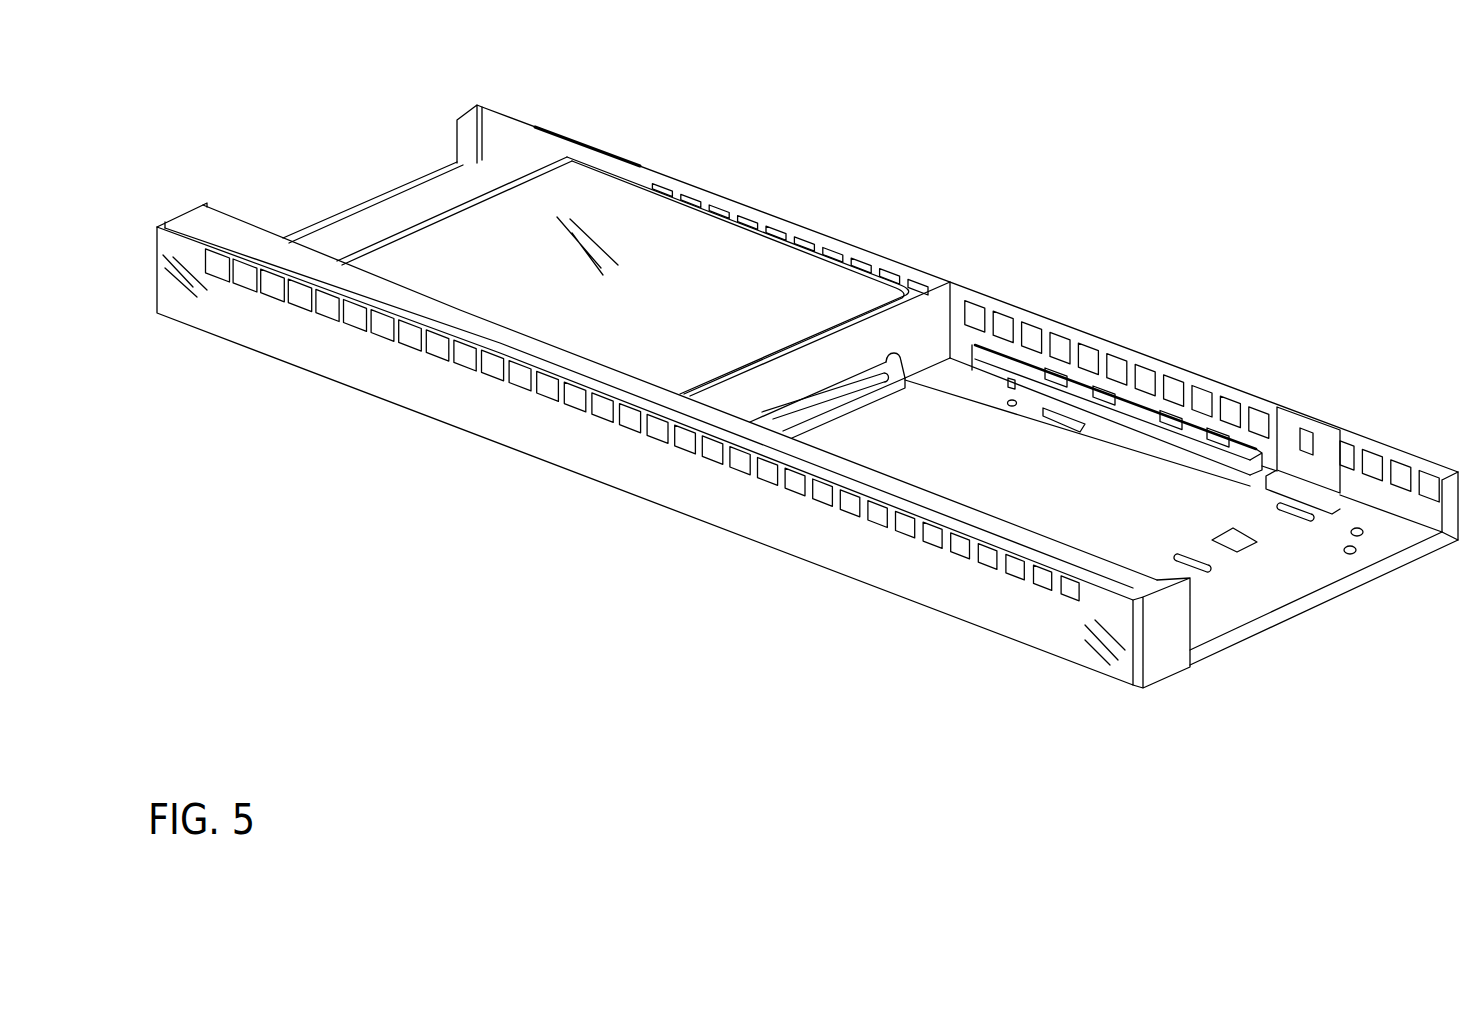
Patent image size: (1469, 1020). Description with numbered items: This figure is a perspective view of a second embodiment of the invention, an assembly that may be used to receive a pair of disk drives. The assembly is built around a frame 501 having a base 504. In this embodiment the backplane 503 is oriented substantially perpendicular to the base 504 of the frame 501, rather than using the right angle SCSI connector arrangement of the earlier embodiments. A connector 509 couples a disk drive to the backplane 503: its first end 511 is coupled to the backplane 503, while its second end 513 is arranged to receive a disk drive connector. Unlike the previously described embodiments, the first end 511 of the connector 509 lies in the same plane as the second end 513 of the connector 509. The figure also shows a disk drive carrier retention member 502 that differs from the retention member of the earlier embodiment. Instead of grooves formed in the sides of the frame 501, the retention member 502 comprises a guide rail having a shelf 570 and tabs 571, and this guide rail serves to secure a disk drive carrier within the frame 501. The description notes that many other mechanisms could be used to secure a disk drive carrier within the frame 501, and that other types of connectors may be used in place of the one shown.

The frame 501 is at (391, 168).
The disk drive carrier retention member 502 is at (1146, 393).
The backplane 503 is at (867, 357).
The base 504 is at (1186, 486).
The connector 509 is at (924, 343).
The first end 511 is at (779, 393).
The second end 513 is at (852, 406).
The shelf 570 is at (1095, 436).
The tabs 571 is at (1167, 433).